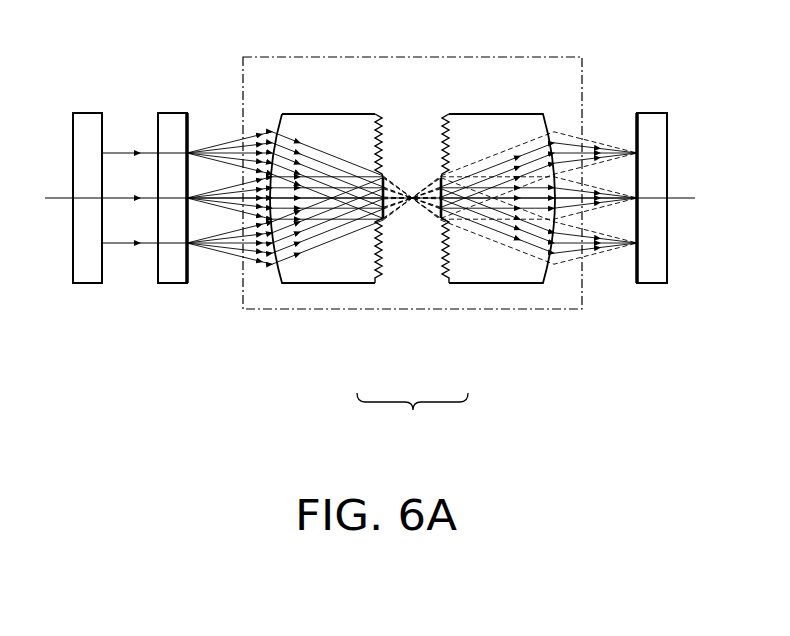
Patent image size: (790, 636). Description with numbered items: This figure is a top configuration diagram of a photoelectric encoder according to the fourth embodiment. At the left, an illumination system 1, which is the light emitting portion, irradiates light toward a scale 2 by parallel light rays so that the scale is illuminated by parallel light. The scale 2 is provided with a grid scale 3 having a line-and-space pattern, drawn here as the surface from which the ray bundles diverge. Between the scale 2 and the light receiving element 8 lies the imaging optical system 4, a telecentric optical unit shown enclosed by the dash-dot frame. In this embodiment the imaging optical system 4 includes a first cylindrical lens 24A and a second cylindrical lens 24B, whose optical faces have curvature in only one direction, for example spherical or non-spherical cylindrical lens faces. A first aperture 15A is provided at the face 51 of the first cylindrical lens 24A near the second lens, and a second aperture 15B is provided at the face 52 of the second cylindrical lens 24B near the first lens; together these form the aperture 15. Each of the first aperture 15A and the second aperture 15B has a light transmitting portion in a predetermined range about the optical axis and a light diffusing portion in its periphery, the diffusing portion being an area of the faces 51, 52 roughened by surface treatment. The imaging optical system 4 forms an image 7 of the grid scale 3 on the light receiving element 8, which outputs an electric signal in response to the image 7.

The illumination system 1 is at (79, 113).
The scale 2 is at (163, 113).
The grid scale 3 is at (188, 128).
The imaging optical system 4 is at (270, 57).
The first cylindrical lens 24A is at (340, 130).
The second cylindrical lens 24B is at (506, 128).
The face 51 is at (378, 272).
The face 52 is at (453, 272).
The first aperture 15A is at (384, 251).
The second aperture 15B is at (440, 251).
The aperture 15 is at (412, 415).
The image 7 is at (637, 128).
The light receiving element 8 is at (665, 113).